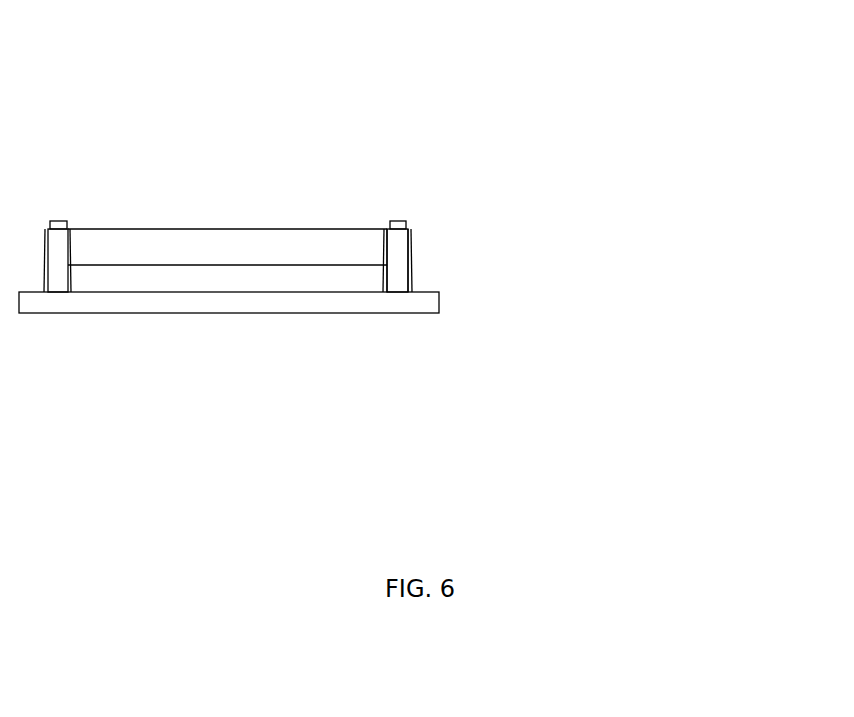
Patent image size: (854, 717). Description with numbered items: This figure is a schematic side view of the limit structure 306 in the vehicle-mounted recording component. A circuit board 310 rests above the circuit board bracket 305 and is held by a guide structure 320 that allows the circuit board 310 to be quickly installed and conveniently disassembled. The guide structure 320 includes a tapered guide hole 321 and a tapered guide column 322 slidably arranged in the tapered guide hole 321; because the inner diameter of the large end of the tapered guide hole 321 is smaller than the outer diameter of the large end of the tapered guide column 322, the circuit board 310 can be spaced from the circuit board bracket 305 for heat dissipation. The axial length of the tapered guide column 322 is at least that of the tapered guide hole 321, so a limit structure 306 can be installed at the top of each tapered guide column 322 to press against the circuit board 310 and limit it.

The circuit board bracket 305 is at (232, 313).
The limit structure 306 is at (62, 221).
The circuit board 310 is at (233, 228).
The guide structure 320 is at (604, 241).
The tapered guide hole 321 is at (410, 243).
The tapered guide column 322 is at (402, 278).